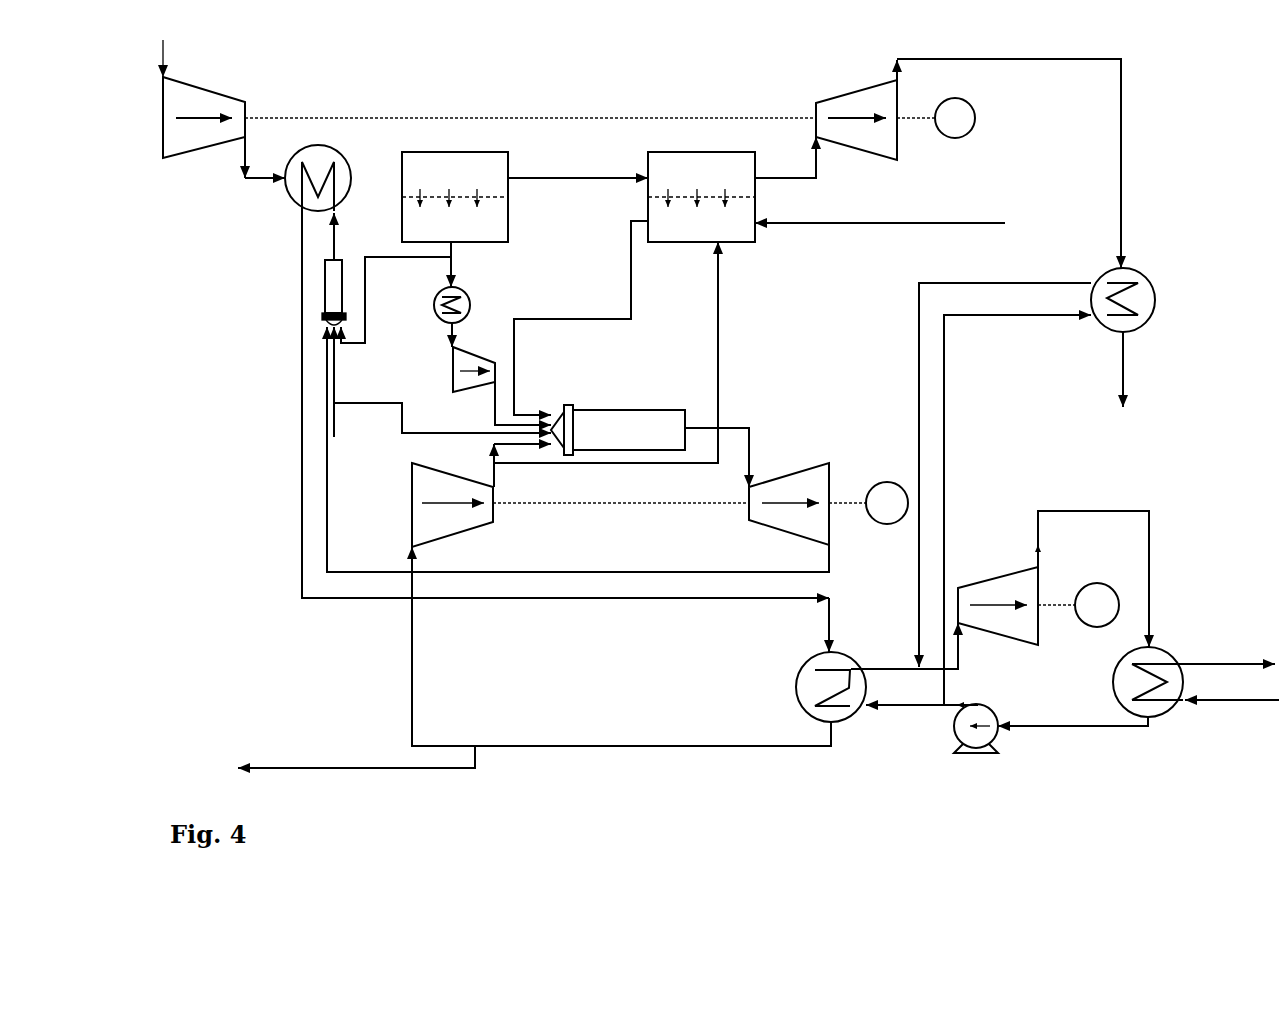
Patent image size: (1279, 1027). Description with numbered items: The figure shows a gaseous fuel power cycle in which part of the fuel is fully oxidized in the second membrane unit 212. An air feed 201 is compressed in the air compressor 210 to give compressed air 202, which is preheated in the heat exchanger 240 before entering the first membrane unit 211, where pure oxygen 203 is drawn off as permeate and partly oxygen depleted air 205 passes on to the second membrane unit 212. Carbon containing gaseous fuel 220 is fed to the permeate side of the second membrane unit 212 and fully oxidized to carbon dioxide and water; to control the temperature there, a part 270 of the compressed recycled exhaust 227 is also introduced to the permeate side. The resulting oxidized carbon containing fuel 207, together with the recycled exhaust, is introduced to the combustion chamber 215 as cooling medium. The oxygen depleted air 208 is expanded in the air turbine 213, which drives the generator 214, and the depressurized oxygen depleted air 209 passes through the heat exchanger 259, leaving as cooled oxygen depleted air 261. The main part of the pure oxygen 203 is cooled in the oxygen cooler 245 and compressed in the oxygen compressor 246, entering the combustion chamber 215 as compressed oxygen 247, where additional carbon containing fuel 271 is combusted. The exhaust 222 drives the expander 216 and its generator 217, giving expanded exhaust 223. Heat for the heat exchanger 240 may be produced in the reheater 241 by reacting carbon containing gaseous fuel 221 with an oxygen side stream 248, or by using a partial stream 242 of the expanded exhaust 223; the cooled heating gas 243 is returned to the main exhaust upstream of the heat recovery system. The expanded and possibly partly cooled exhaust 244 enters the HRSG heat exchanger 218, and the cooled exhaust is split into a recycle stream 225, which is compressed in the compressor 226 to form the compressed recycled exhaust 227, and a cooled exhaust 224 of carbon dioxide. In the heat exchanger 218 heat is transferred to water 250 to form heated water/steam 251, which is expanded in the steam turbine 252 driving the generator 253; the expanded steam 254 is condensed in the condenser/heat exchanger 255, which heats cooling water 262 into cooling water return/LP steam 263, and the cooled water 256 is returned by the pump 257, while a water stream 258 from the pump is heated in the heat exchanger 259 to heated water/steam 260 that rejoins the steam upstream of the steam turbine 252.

The air feed 201 is at (175, 54).
The compressed air 202 is at (240, 158).
The pure oxygen 203 is at (452, 246).
The partly oxygen depleted air 205 is at (578, 167).
The oxidized carbon containing fuel 207 is at (630, 255).
The oxygen depleted air 208 is at (811, 166).
The depressurized oxygen depleted air 209 is at (1038, 163).
The air compressor 210 is at (204, 117).
The first membrane unit 211 is at (455, 197).
The second membrane unit 212 is at (701, 197).
The air turbine 213 is at (856, 120).
The generator/engine 214 is at (986, 118).
The combustion chamber 215 is at (618, 430).
The expander 216 is at (789, 504).
The generator 217 is at (889, 487).
The HRSG heat exchanger 218 is at (795, 688).
The carbon containing gaseous fuel 220 is at (880, 238).
The carbon containing gaseous fuel 221 is at (336, 418).
The exhaust 222 is at (707, 423).
The expanded exhaust 223 is at (826, 560).
The cooled exhaust 224 is at (356, 751).
The recycle stream 225 is at (621, 646).
The compressor 226 is at (452, 505).
The compressed recycled exhaust 227 is at (496, 467).
The heat exchanger 240 is at (318, 166).
The reheater 241 is at (333, 286).
The partial stream of expanded exhaust 242 is at (329, 508).
The cooled heating gas 243 is at (565, 418).
The expanded and possibly partly cooled exhaust 244 is at (835, 632).
The oxygen cooler 245 is at (477, 316).
The oxygen compressor 246 is at (453, 369).
The compressed oxygen 247 is at (497, 400).
The oxygen side stream 248 is at (367, 282).
The water 250 is at (922, 719).
The heated water/steam 251 is at (904, 648).
The steam turbine 252 is at (998, 606).
The generator 253 is at (1097, 590).
The expanded steam 254 is at (1093, 563).
The condenser/heat exchanger 255 is at (1125, 676).
The cooled water 256 is at (1059, 738).
The pump 257 is at (978, 746).
The water 258 is at (1017, 510).
The heat exchanger 259 is at (1142, 297).
The heated water/steam 260 is at (985, 475).
The cooled oxygen depleted air 261 is at (1149, 369).
The cooling water 262 is at (1205, 715).
The cooling water return/LP steam 263 is at (1203, 655).
The part of recycled exhaust 270 is at (718, 297).
The additional carbon containing fuel 271 is at (420, 432).